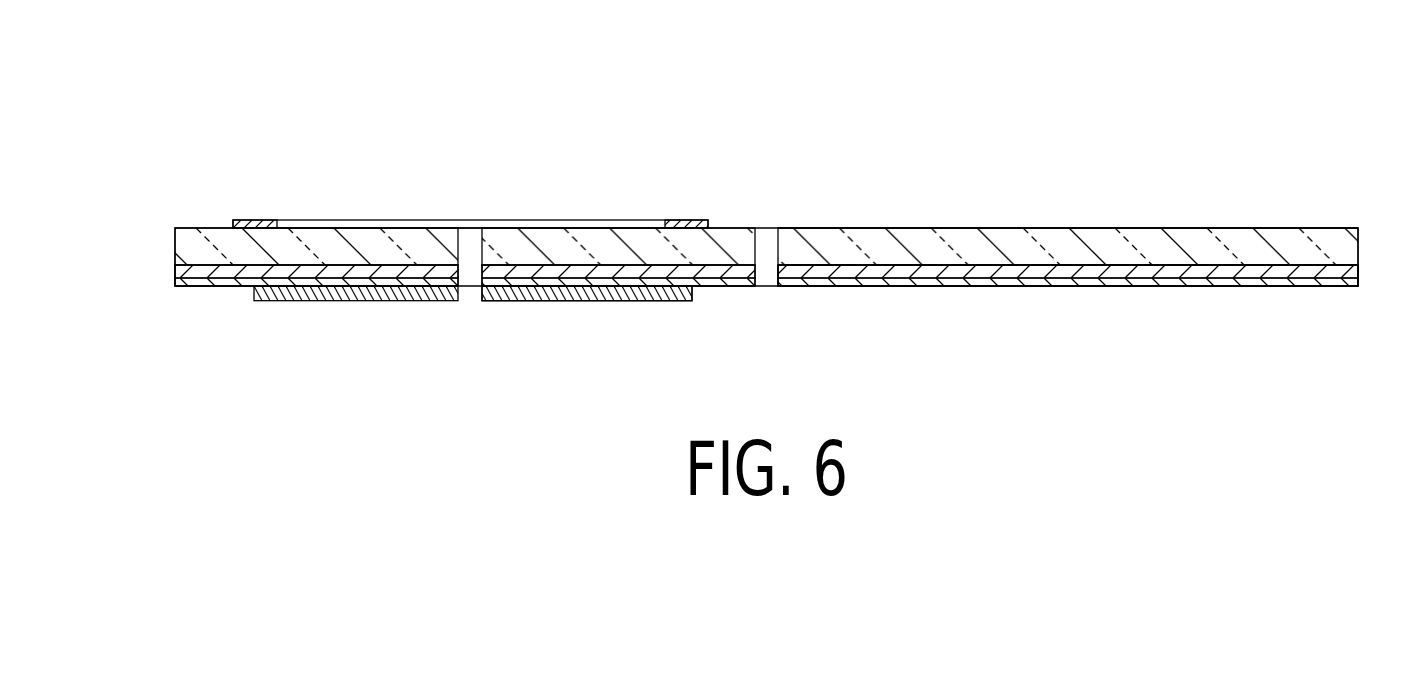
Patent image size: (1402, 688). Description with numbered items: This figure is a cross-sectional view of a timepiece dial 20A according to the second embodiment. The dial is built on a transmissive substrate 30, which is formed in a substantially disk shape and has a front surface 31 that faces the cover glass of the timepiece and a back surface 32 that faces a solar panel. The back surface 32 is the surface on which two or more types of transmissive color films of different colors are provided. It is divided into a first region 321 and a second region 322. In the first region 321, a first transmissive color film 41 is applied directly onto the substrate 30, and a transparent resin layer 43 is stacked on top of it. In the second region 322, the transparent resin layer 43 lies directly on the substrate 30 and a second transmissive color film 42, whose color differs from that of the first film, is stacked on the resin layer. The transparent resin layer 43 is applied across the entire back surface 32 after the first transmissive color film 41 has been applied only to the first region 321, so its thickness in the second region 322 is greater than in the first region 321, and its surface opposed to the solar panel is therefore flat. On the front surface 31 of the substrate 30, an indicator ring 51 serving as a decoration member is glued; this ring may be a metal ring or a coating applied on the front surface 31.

The timepiece dial 20A is at (1238, 130).
The substrate 30 is at (1142, 228).
The front surface 31 is at (1315, 228).
The back surface 32 is at (1328, 278).
The first region 321 is at (1213, 268).
The second region 322 is at (617, 270).
The first transmissive color film 41 is at (1048, 272).
The second transmissive color film 42 is at (372, 292).
The transparent resin layer 43 is at (522, 278).
The indicator ring 51 is at (678, 220).